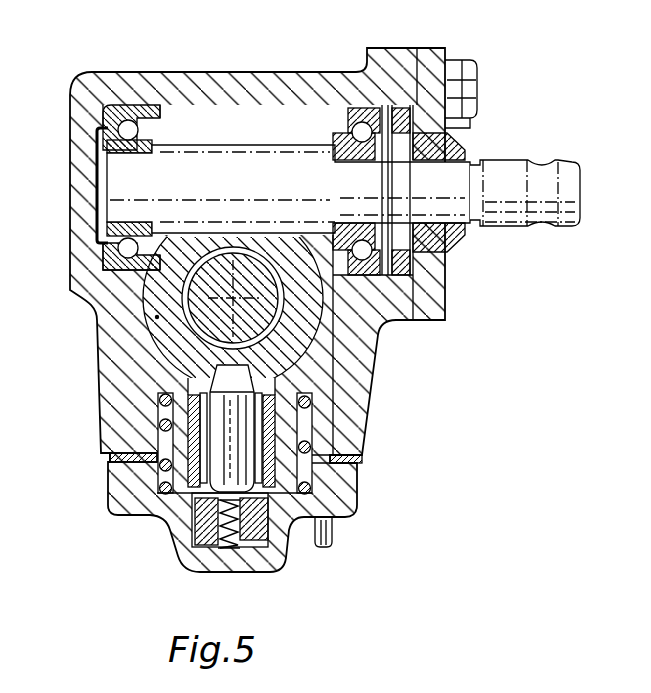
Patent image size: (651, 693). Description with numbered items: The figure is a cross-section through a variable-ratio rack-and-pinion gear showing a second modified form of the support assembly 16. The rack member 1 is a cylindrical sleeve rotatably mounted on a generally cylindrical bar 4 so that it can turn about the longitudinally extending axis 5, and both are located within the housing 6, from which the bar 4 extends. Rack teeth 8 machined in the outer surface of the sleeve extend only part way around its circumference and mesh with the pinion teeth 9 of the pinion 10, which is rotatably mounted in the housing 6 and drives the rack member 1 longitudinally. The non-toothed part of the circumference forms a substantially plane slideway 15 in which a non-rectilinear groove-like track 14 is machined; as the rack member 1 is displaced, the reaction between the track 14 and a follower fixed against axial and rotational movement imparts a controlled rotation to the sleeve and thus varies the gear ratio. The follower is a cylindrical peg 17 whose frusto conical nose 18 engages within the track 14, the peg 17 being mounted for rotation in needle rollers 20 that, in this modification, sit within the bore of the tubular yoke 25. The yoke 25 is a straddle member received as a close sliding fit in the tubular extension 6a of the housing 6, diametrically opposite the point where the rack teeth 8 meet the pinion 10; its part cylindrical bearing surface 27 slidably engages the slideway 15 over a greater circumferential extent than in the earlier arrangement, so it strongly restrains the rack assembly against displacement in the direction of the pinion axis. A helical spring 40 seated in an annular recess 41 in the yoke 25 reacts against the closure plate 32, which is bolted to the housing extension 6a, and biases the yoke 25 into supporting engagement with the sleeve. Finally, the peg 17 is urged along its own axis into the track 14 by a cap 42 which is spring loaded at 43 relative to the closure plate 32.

The rack member 1 is at (298, 285).
The bar 4 is at (244, 336).
The longitudinally extending axis 5 is at (233, 284).
The housing 6 is at (168, 92).
The tubular extension of the housing 6a is at (364, 373).
The rack teeth 8 is at (262, 248).
The pinion teeth 9 is at (287, 153).
The pinion 10 is at (217, 189).
The track 14 is at (262, 370).
The slideway 15 is at (168, 370).
The support assembly 16 is at (114, 360).
The peg 17 is at (254, 466).
The frusto conical nose 18 is at (212, 370).
The needle rollers 20 is at (258, 447).
The yoke 25 is at (318, 383).
The part cylindrical bearing surface 27 is at (155, 317).
The closure plate 32 is at (178, 522).
The helical spring 40 is at (160, 424).
The annular recess 41 is at (120, 462).
The cap 42 is at (266, 522).
The spring loading 43 is at (238, 548).